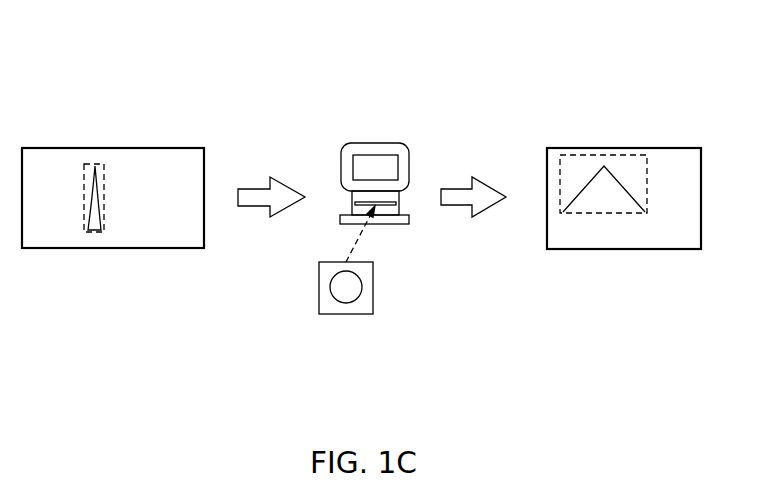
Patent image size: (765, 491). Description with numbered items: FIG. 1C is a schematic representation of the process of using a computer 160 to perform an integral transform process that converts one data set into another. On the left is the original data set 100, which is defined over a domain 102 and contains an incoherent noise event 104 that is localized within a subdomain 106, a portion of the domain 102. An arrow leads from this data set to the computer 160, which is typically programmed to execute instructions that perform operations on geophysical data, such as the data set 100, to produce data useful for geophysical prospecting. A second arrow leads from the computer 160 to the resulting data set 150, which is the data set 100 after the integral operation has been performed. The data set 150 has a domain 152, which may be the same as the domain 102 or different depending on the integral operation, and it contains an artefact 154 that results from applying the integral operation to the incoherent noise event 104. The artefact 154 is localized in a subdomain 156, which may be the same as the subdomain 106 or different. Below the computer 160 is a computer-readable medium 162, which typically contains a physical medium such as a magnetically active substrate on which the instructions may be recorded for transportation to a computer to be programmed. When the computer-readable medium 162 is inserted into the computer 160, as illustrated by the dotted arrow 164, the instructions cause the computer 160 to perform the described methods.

The data set 100 is at (113, 154).
The domain 102 is at (78, 147).
The incoherent noise event 104 is at (98, 178).
The subdomain 106 is at (106, 203).
The data set 150 is at (624, 139).
The domain 152 is at (643, 147).
The artefact 154 is at (609, 172).
The subdomain 156 is at (648, 182).
The computer 160 is at (373, 128).
The computer-readable medium 162 is at (385, 292).
The dotted arrow 164 is at (357, 239).